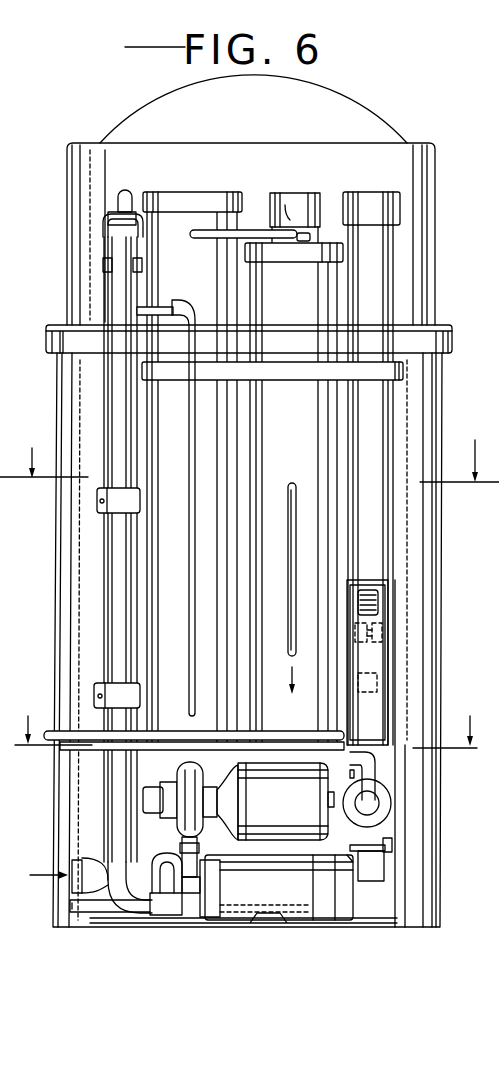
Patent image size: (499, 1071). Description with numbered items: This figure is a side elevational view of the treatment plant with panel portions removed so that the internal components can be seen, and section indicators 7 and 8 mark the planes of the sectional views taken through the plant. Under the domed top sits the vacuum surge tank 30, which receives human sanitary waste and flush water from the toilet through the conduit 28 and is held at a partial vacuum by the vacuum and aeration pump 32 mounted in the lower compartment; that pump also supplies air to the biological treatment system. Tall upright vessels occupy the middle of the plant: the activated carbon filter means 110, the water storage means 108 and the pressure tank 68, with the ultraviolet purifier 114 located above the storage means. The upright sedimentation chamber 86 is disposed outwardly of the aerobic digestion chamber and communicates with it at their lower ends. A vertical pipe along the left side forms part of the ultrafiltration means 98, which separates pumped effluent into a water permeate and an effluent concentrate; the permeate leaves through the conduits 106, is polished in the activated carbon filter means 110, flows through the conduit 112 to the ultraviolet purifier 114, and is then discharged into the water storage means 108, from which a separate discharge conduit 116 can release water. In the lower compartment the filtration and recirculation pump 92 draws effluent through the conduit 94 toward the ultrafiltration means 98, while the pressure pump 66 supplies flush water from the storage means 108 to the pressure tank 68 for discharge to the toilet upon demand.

The vacuum surge tank 30 is at (360, 94).
The conduit 112 is at (252, 230).
The ultraviolet purifier 114 is at (288, 208).
The activated carbon filter means 110 is at (203, 280).
The water storage means 108 is at (313, 318).
The conduits 106 is at (167, 301).
The pressure tank 68 is at (372, 535).
The ultrafiltration means 98 is at (110, 589).
The discharge conduit 116 is at (297, 550).
The upright sedimentation chamber 86 is at (496, 649).
The filtration and recirculation pump 92 is at (192, 797).
The pressure pump 66 is at (385, 800).
The conduit 28 is at (93, 865).
The conduit 94 is at (424, 853).
The vacuum and aeration pump 32 is at (340, 890).
The section line 7 is at (249, 516).
The section line 8 is at (247, 726).